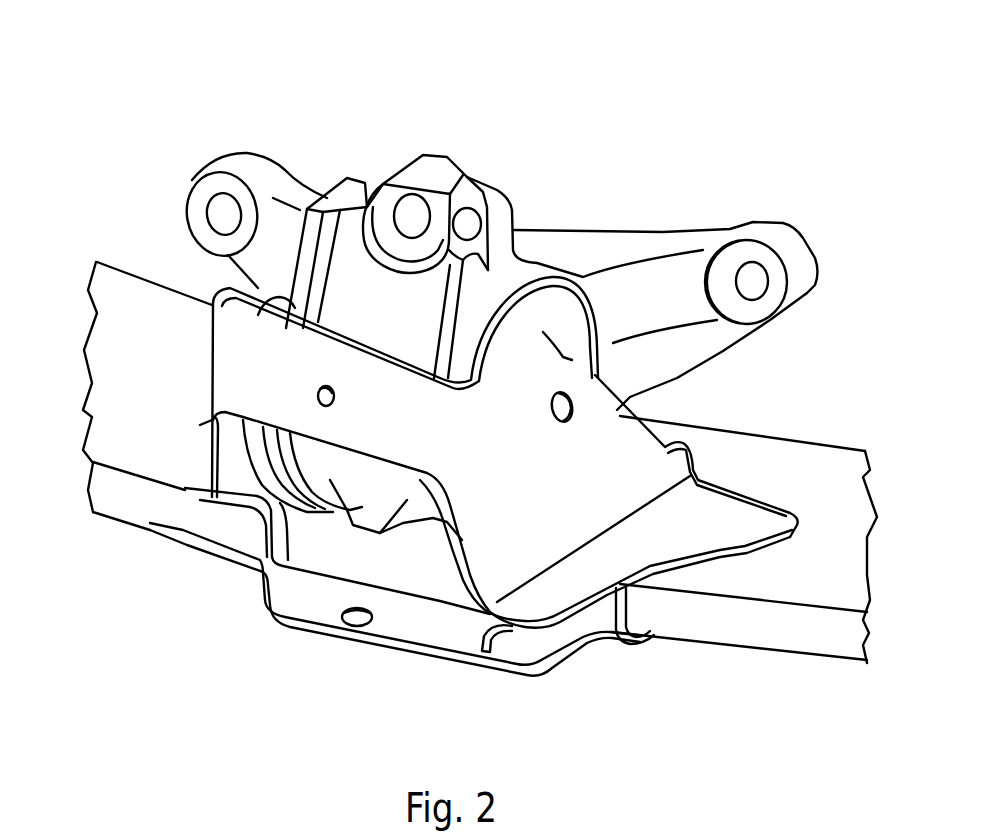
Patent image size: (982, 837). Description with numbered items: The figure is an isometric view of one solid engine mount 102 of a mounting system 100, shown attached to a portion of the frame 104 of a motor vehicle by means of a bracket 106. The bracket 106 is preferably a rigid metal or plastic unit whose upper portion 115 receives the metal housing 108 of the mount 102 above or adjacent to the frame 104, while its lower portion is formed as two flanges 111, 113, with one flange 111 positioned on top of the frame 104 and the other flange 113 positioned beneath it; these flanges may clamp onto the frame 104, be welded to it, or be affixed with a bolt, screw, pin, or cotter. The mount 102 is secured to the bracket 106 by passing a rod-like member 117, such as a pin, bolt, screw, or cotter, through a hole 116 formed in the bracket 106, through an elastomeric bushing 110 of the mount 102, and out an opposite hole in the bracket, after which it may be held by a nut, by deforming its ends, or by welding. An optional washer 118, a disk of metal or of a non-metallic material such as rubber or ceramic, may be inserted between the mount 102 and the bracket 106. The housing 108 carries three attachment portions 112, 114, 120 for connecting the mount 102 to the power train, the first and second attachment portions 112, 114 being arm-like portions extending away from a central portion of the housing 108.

The mounting system 100 is at (158, 149).
The mount 102 is at (437, 130).
The frame 104 is at (133, 438).
The bracket 106 is at (213, 547).
The metal housing 108 is at (364, 184).
The elastomeric bushing 110 is at (556, 302).
The flange 111 is at (734, 508).
The first attachment portion 112 is at (213, 207).
The flange 113 is at (640, 645).
The second attachment portion 114 is at (755, 282).
The upper portion 115 is at (234, 362).
The hole 116 is at (574, 404).
The rod-like member 117 is at (565, 413).
The optional washer 118 is at (300, 480).
The third attachment portion 120 is at (438, 170).